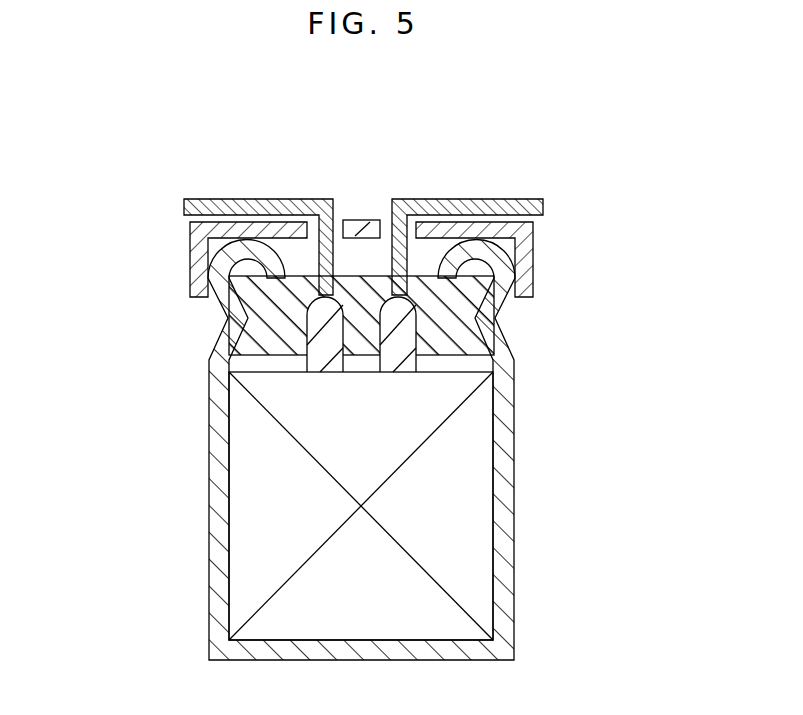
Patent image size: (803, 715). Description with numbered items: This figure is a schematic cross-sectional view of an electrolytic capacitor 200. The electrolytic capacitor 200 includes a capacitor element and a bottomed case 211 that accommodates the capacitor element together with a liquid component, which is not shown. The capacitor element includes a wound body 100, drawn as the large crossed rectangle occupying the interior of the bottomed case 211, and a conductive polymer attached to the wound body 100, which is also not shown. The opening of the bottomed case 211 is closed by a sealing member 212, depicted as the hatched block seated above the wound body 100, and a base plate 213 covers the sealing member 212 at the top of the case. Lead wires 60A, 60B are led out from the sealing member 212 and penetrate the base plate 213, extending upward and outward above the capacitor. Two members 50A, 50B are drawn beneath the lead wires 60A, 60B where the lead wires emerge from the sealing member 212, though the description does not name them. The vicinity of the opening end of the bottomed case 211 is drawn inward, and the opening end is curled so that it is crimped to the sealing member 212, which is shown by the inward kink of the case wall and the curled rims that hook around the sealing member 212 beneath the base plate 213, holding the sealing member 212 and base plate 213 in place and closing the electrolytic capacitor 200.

The electrolytic capacitor 200 is at (433, 100).
The bottomed case 211 is at (497, 456).
The sealing member 212 is at (453, 322).
The base plate 213 is at (362, 220).
The wound body 100 is at (268, 488).
The positive electrode terminal 50A is at (323, 323).
The negative electrode terminal 50B is at (398, 347).
The lead wire 60A is at (258, 198).
The lead wire 60B is at (478, 198).